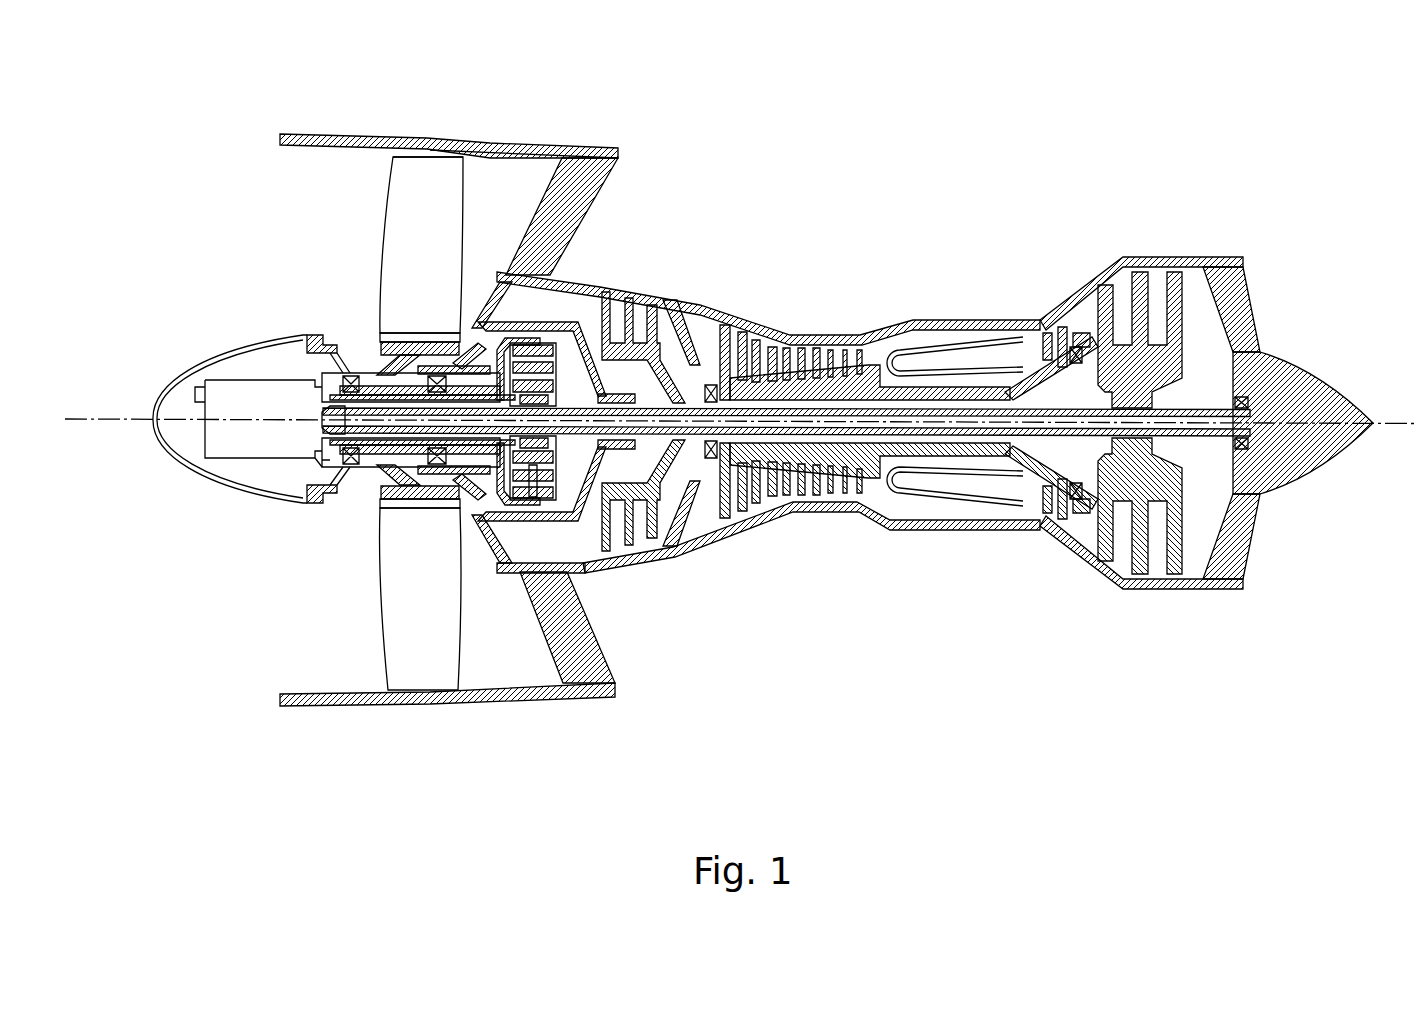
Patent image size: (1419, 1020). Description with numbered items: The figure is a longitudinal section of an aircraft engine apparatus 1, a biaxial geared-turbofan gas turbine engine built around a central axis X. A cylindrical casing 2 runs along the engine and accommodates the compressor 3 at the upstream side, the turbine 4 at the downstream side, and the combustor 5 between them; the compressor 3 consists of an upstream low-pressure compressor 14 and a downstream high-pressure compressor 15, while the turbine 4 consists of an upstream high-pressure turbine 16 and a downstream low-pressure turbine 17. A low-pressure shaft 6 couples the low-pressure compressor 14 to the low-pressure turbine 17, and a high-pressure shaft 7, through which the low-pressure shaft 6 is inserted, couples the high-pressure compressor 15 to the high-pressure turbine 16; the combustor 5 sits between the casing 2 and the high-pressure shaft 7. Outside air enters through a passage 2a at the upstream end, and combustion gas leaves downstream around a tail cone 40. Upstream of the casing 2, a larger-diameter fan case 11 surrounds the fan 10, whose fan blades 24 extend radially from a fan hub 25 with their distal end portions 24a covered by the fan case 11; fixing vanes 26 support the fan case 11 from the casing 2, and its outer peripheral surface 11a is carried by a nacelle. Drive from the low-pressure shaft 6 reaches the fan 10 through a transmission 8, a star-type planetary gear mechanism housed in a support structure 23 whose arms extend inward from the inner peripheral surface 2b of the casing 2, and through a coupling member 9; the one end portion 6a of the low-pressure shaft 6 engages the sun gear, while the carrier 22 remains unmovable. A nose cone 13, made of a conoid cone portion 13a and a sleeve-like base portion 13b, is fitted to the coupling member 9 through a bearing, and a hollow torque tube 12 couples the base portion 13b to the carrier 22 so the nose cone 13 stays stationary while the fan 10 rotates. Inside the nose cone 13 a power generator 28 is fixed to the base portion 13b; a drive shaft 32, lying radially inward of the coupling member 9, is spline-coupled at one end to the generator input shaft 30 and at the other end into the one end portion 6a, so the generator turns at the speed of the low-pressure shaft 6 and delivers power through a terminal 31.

The aircraft engine apparatus 1 is at (1200, 157).
The casing 2 is at (713, 303).
The passage 2a is at (494, 293).
The inner peripheral surface 2b is at (643, 294).
The compressor 3 is at (720, 607).
The turbine 4 is at (1132, 647).
The combustor 5 is at (968, 335).
The low-pressure shaft 6 is at (1042, 405).
The one end portion of the low-pressure shaft 6a is at (457, 362).
The high-pressure shaft 7 is at (973, 457).
The transmission 8 is at (557, 342).
The coupling member 9 is at (482, 523).
The fan 10 is at (323, 253).
The fan case 11 is at (345, 134).
The outer peripheral surface 11a is at (488, 147).
The torque tube 12 is at (459, 372).
The nose cone 13 is at (158, 398).
The cone portion 13a is at (210, 478).
The base portion 13b is at (335, 492).
The low-pressure compressor 14 is at (721, 523).
The high-pressure compressor 15 is at (747, 517).
The high-pressure turbine 16 is at (1050, 535).
The low-pressure turbine 17 is at (1078, 548).
The carrier 22 is at (554, 536).
The support structure 23 is at (580, 574).
The fan blades 24 is at (376, 302).
The distal end portion 24a is at (432, 147).
The fan hub 25 is at (381, 372).
The fixing vanes 26 is at (608, 661).
The power generator 28 is at (243, 380).
The generator input shaft 30 is at (318, 470).
The terminal 31 is at (182, 384).
The drive shaft 32 is at (376, 426).
The tail cone 40 is at (1303, 473).
The axis X is at (1308, 395).